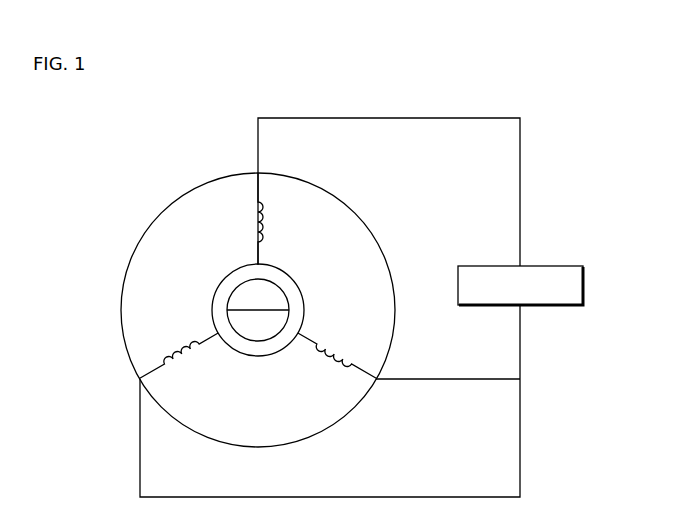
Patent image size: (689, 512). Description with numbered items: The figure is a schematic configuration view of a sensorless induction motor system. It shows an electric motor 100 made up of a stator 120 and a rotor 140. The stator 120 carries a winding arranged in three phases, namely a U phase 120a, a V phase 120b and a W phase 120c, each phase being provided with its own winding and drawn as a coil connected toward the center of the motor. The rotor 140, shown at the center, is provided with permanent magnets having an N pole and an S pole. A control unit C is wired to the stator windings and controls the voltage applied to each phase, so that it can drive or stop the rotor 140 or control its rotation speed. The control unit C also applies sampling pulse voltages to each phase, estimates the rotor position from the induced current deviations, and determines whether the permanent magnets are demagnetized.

The electric motor 100 is at (136, 220).
The stator 120 is at (197, 187).
The U phase 120a is at (265, 217).
The V phase 120b is at (173, 346).
The W phase 120c is at (331, 372).
The rotor 140 is at (286, 286).
The control unit C is at (559, 266).